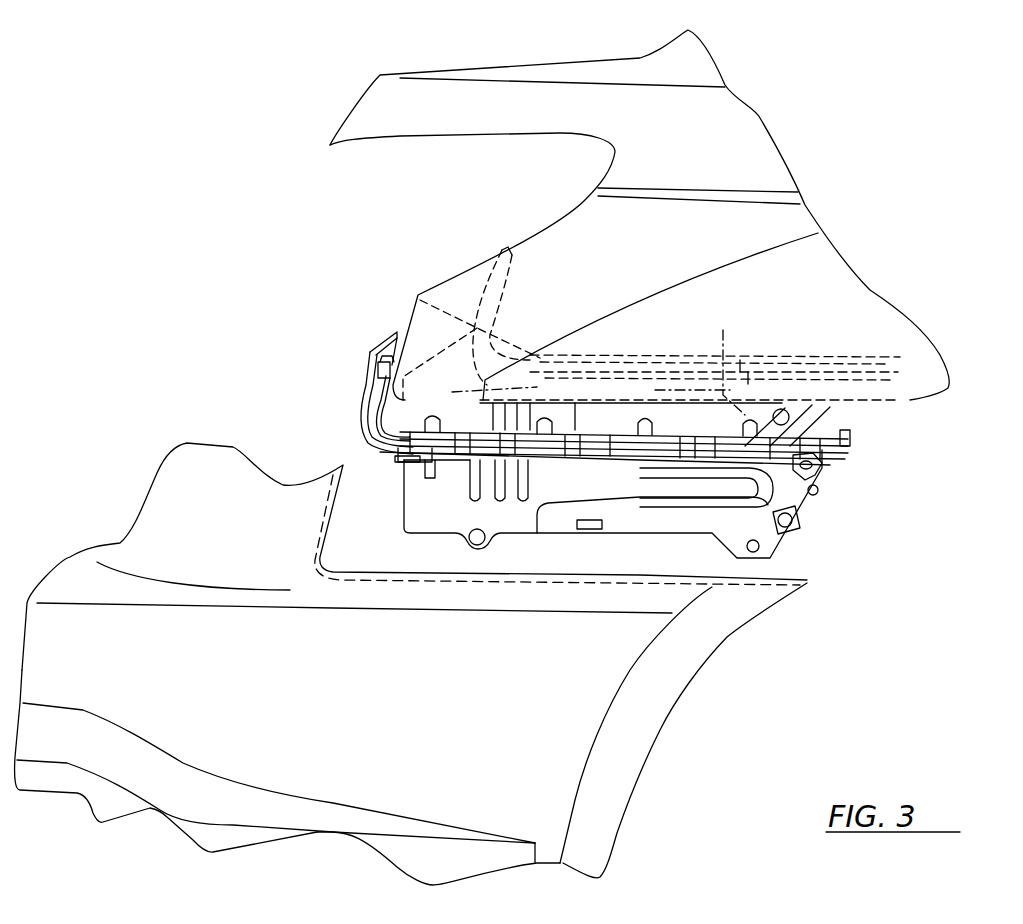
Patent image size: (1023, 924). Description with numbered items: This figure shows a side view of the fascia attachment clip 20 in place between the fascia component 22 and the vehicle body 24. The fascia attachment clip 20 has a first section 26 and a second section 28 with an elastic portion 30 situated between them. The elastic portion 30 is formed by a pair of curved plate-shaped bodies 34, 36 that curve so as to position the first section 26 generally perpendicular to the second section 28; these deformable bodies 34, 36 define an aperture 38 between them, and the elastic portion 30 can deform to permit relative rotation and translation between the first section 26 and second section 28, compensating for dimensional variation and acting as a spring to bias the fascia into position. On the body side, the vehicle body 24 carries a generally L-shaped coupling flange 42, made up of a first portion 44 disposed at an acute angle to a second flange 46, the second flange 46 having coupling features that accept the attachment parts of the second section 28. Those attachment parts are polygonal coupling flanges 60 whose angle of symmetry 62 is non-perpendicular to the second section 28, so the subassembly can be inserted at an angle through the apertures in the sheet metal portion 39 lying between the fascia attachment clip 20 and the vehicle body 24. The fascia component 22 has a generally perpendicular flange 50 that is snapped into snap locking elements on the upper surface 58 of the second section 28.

The fascia attachment clip 20 is at (820, 464).
The fascia component 22 is at (660, 688).
The vehicle body 24 is at (773, 546).
The first section 26 is at (368, 352).
The second section 28 is at (850, 443).
The elastic portion 30 is at (360, 445).
The curved plate-shaped body 34 is at (380, 454).
The curved plate-shaped body 36 is at (387, 397).
The aperture 38 is at (360, 410).
The sheet metal portion 39 is at (895, 332).
The coupling flange 42 is at (650, 354).
The first portion 44 is at (805, 356).
The second flange 46 is at (418, 297).
The flange 50 is at (740, 585).
The upper surface 58 is at (605, 435).
The coupling flange 60 is at (650, 432).
The angle of symmetry 62 is at (728, 358).